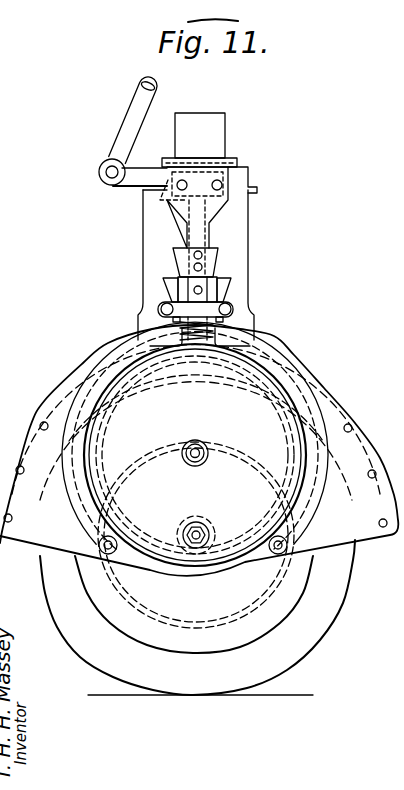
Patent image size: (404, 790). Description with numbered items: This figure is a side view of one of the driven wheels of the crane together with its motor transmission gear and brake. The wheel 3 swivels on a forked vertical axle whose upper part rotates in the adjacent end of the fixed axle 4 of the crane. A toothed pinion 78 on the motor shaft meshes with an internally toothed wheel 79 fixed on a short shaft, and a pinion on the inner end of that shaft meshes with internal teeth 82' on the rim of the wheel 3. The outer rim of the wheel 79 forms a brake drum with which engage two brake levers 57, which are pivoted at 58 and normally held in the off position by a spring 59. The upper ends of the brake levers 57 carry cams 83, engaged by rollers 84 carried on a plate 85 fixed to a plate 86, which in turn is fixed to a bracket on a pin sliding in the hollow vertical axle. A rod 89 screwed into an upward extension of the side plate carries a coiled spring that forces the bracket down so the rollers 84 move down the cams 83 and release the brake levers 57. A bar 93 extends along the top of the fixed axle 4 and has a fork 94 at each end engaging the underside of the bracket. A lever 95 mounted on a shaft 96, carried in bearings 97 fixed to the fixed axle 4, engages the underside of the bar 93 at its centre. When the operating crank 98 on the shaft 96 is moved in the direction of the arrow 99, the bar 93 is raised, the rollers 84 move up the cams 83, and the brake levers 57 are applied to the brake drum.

The wheel 3 is at (337, 586).
The fixed axle 4 is at (238, 237).
The brake levers 57 is at (110, 354).
The pivots 58 is at (104, 554).
The spring 59 is at (217, 330).
The toothed pinion 78 is at (208, 523).
The internally toothed wheel 79 is at (143, 367).
The internal teeth 82' is at (196, 558).
The cams 83 is at (177, 287).
The rollers 84 is at (162, 308).
The plate 85 is at (180, 263).
The plate 86 is at (213, 213).
The rod 89 is at (217, 120).
The bar 93 is at (190, 172).
The fork 94 is at (233, 170).
The lever 95 is at (141, 180).
The shaft 96 is at (106, 173).
The bearings 97 is at (133, 186).
The operating crank 98 is at (160, 92).
The arrow 99 is at (128, 94).